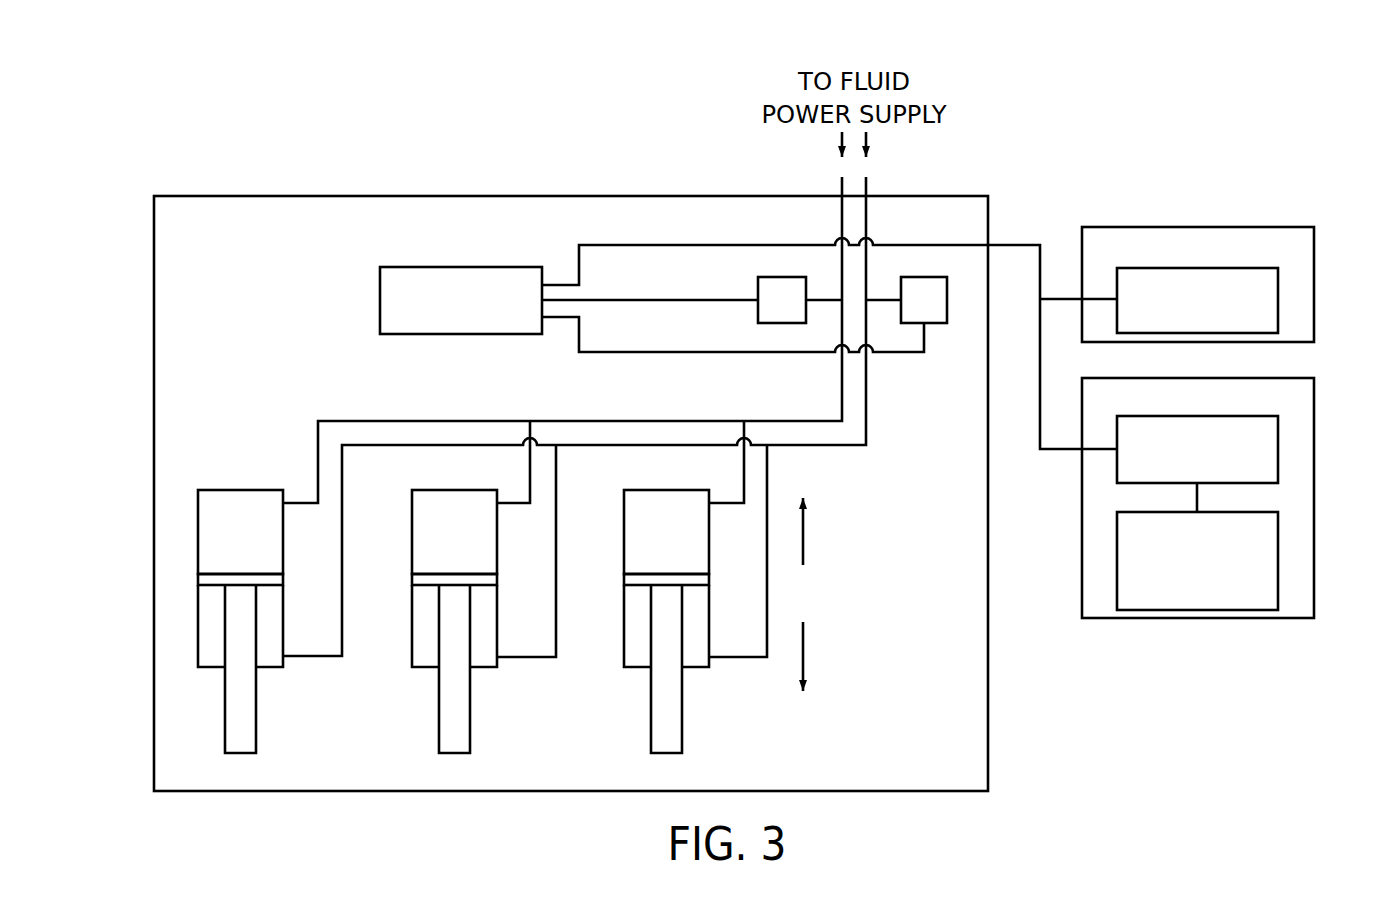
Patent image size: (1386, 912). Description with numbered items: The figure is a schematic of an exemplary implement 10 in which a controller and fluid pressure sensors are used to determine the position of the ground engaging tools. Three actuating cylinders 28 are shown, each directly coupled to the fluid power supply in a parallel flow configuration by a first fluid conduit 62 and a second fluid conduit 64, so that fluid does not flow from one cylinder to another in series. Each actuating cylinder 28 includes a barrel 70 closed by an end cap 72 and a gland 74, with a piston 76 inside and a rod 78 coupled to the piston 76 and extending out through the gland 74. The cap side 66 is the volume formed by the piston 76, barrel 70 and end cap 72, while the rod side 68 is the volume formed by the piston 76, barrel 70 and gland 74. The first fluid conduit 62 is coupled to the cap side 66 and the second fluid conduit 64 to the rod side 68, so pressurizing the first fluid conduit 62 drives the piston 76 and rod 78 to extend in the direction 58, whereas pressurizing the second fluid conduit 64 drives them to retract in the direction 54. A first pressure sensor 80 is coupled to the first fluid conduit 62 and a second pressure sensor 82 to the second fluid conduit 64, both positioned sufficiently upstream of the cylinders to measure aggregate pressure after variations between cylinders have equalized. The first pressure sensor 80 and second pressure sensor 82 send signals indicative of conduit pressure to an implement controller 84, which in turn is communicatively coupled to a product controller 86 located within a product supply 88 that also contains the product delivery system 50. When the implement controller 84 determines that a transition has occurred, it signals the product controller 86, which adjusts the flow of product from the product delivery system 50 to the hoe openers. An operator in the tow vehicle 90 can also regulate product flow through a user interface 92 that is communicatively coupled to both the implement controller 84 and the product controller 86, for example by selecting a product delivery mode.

The implement 10 is at (572, 196).
The actuating cylinder 28 is at (437, 605).
The product delivery system 50 is at (1278, 560).
The retraction direction 54 is at (803, 530).
The extension direction 58 is at (803, 655).
The first fluid conduit 62 is at (434, 421).
The second fluid conduit 64 is at (866, 398).
The cap side 66 is at (437, 515).
The rod side 68 is at (436, 641).
The barrel 70 is at (431, 578).
The end cap 72 is at (493, 480).
The gland 74 is at (474, 698).
The piston 76 is at (453, 552).
The rod 78 is at (482, 669).
The first pressure sensor 80 is at (781, 277).
The second pressure sensor 82 is at (925, 277).
The implement controller 84 is at (459, 267).
The product controller 86 is at (1278, 448).
The product supply 88 is at (1197, 618).
The tow vehicle 90 is at (1197, 227).
The user interface 92 is at (1278, 300).